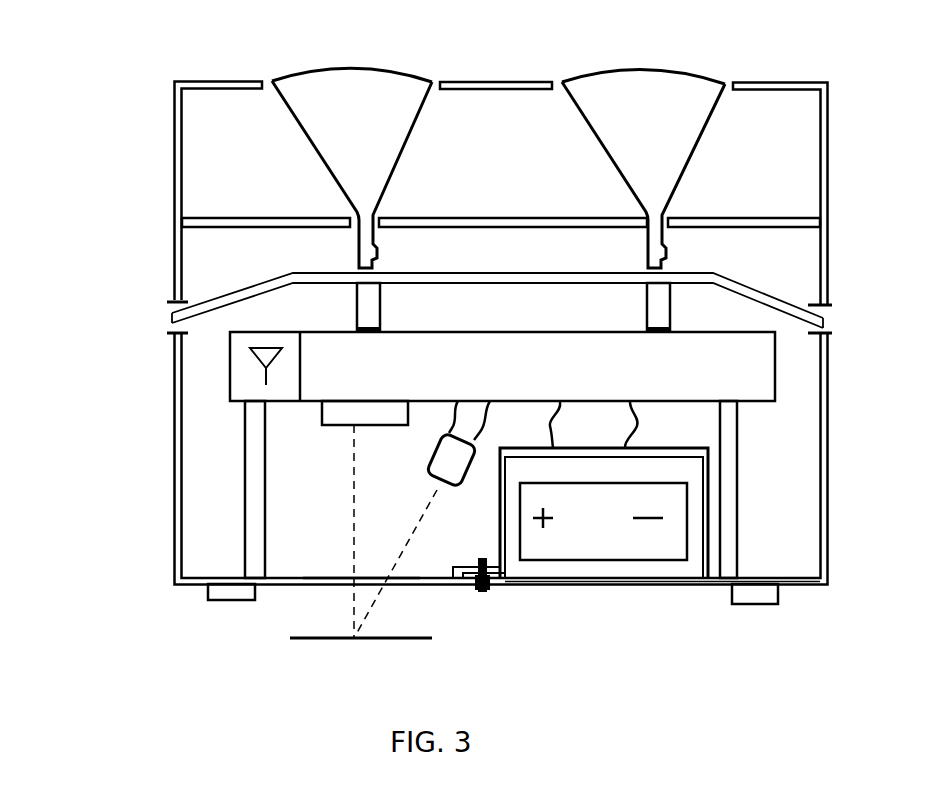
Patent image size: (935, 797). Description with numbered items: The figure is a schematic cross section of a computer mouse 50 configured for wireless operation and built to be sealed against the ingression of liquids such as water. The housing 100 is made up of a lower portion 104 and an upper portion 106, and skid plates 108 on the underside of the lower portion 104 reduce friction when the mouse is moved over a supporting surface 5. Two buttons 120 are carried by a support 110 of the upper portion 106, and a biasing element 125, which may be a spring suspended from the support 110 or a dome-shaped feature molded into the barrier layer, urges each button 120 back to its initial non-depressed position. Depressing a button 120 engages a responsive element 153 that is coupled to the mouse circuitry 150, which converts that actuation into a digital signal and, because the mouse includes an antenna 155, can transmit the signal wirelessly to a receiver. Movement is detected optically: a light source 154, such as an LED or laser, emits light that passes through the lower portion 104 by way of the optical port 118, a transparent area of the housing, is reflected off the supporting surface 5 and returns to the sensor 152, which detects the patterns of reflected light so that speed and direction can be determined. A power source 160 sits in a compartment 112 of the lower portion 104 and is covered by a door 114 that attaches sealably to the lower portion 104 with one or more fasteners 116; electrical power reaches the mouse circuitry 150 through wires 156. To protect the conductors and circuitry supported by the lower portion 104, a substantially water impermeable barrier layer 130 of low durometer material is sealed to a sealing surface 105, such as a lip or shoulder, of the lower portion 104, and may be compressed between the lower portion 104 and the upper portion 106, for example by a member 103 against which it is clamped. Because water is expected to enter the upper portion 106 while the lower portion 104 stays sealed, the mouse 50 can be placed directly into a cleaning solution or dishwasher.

The computer mouse 50 is at (97, 637).
The supporting surface 5 is at (405, 638).
The housing 100 is at (173, 560).
The opposing member 103 is at (243, 532).
The lower portion 104 is at (173, 538).
The sealing surface 105 is at (172, 321).
The upper portion 106 is at (173, 190).
The skid plates 108 is at (227, 597).
The support 110 is at (290, 216).
The compartment 112 is at (500, 505).
The door 114 is at (593, 585).
The fasteners 116 is at (485, 594).
The optical port 118 is at (327, 585).
The buttons 120 is at (330, 70).
The biasing element 125 is at (378, 237).
The barrier layer 130 is at (205, 306).
The mouse circuitry 150 is at (502, 370).
The sensor 152 is at (333, 425).
The responsive element 153 is at (380, 310).
The light source 154 is at (427, 469).
The antenna 155 is at (245, 363).
The wires 156 is at (637, 425).
The power source 160 is at (562, 553).